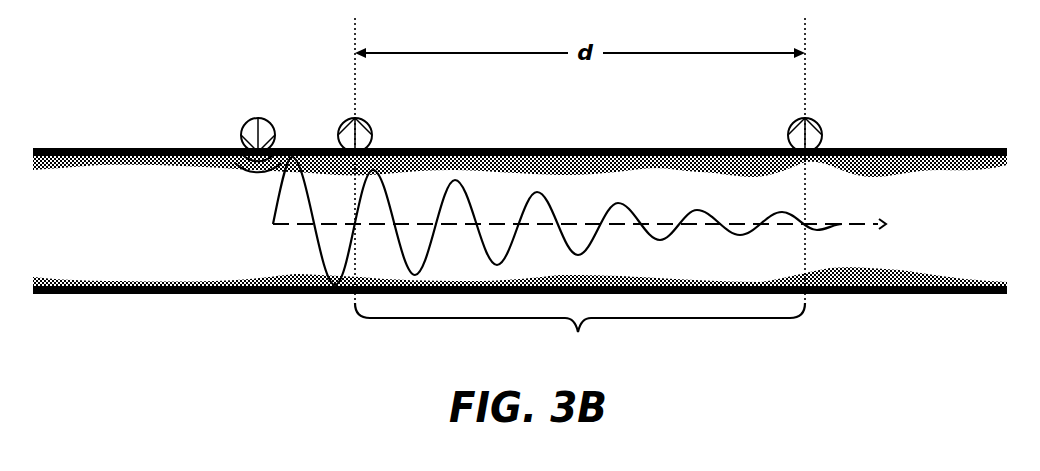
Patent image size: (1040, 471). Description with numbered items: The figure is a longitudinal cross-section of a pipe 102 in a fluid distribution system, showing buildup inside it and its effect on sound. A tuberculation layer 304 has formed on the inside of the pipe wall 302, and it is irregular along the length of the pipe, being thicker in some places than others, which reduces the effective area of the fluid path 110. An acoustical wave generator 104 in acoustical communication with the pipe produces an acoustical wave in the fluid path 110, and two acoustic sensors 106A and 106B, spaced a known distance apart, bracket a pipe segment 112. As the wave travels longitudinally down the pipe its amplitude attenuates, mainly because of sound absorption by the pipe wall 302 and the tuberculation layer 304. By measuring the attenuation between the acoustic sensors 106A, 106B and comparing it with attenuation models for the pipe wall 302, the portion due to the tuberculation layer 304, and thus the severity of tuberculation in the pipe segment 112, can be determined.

The pipe 102 is at (116, 126).
The acoustical wave generator 104 is at (246, 122).
The acoustic sensor 106A is at (344, 122).
The acoustic sensor 106B is at (815, 121).
The fluid path 110 is at (127, 233).
The pipe segment 112 is at (580, 333).
The pipe wall 302 is at (450, 148).
The tuberculation layer 304 is at (578, 166).